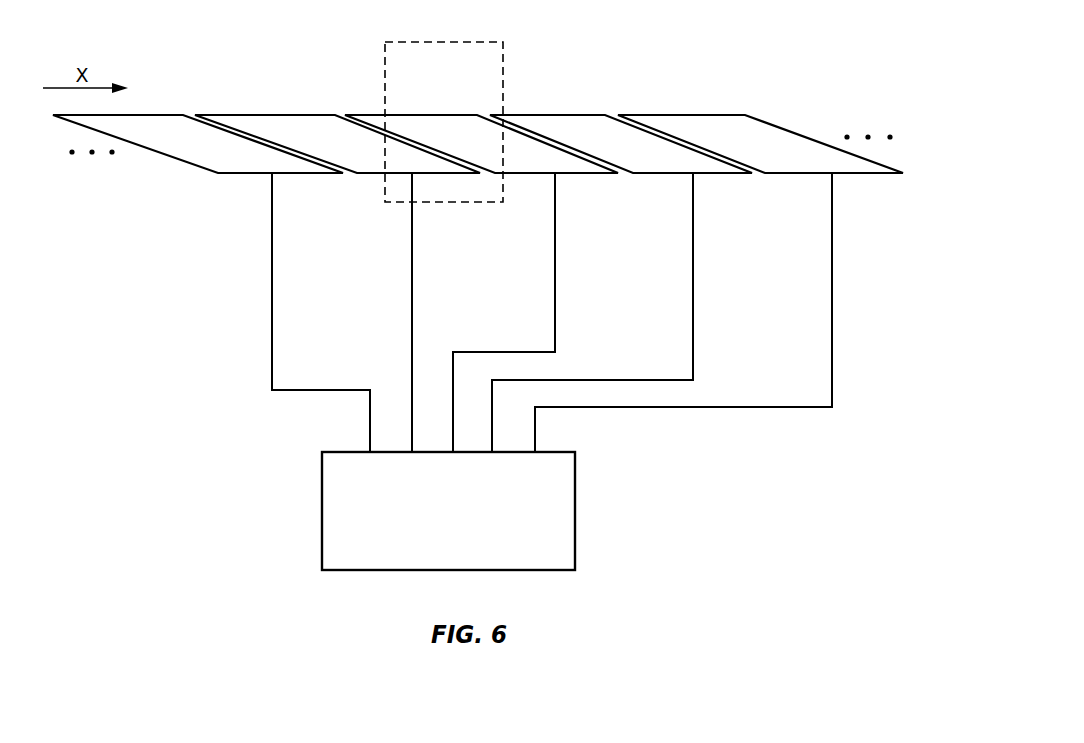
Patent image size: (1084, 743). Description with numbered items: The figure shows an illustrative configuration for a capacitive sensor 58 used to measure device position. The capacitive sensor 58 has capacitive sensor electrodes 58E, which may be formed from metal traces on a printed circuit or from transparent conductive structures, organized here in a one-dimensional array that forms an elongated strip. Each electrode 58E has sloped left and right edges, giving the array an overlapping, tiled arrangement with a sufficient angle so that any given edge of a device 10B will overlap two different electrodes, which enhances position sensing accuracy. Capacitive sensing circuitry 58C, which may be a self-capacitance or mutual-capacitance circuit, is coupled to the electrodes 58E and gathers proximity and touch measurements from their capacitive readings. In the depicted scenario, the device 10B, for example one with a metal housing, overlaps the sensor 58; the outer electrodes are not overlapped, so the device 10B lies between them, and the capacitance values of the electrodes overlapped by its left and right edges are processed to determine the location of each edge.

The capacitive sensor 58 is at (748, 88).
The capacitive sensor electrodes 58E is at (915, 112).
The capacitive sensing circuitry 58C is at (575, 505).
The device 10B is at (503, 48).